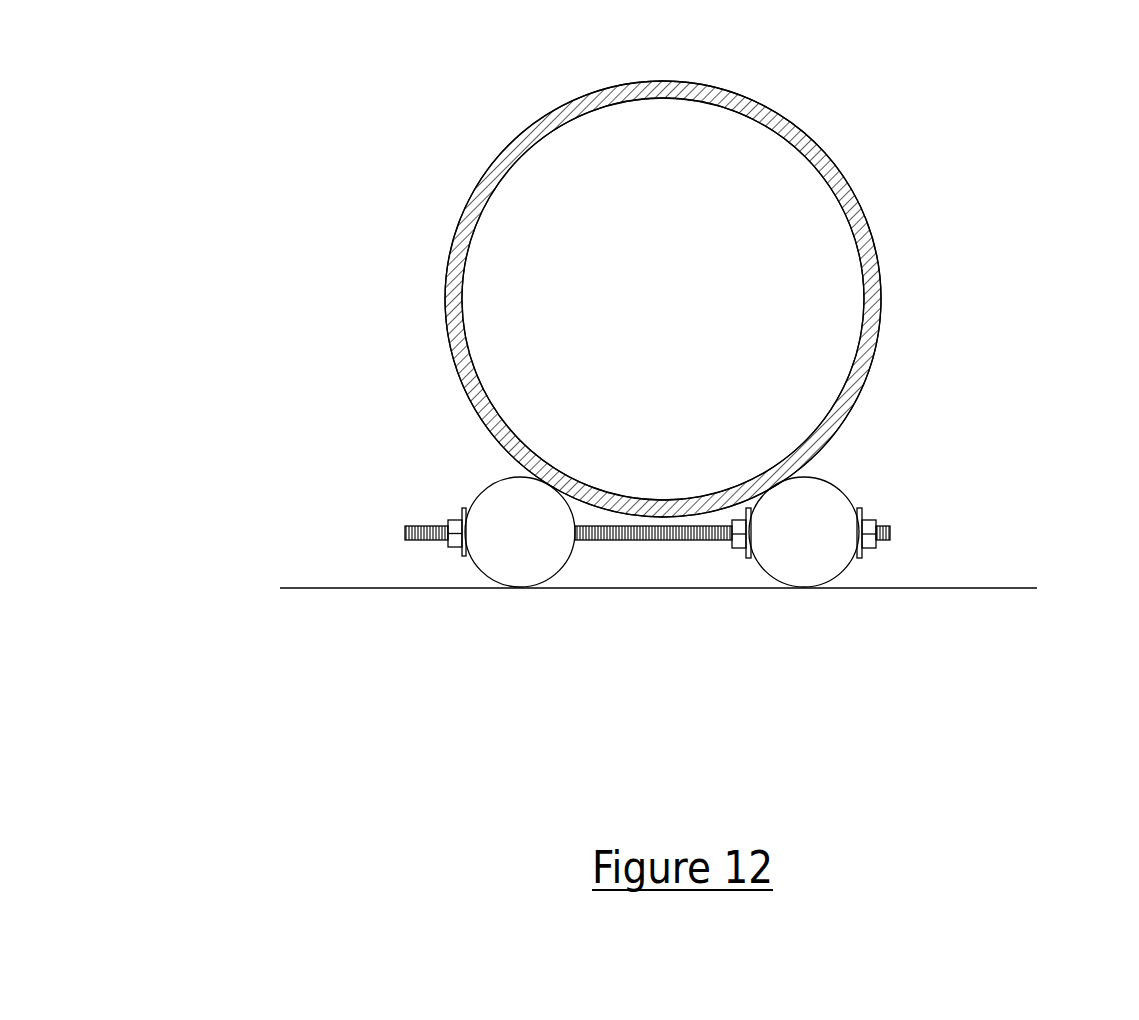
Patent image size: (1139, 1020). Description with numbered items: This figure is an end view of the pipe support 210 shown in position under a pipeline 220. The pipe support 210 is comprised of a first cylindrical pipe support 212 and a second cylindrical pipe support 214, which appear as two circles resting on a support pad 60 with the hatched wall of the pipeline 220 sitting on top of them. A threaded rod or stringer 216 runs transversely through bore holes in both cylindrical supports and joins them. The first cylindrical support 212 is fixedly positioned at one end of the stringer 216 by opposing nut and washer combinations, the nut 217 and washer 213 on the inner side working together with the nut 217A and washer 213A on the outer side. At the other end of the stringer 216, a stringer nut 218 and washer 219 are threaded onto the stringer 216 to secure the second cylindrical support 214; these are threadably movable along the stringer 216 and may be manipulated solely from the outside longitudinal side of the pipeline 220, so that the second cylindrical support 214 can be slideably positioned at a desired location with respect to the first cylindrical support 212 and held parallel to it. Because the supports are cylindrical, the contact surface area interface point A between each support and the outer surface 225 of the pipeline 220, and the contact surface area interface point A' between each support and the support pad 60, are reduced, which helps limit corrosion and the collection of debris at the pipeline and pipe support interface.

The support pad 60 is at (627, 541).
The pipe support 210 is at (647, 646).
The first cylindrical pipe support 212 is at (882, 557).
The washer 213 is at (822, 601).
The washer 213A is at (980, 511).
The second cylindrical pipe support 214 is at (443, 604).
The threaded rod or stringer 216 is at (647, 605).
The nut 217 is at (798, 626).
The nut 217A is at (987, 550).
The stringer nut 218 is at (351, 583).
The washer 219 is at (379, 599).
The pipeline 220 is at (746, 299).
The outer surface 225 is at (746, 299).
The contact surface area interface point A is at (660, 455).
The contact surface area interface point A' is at (694, 688).